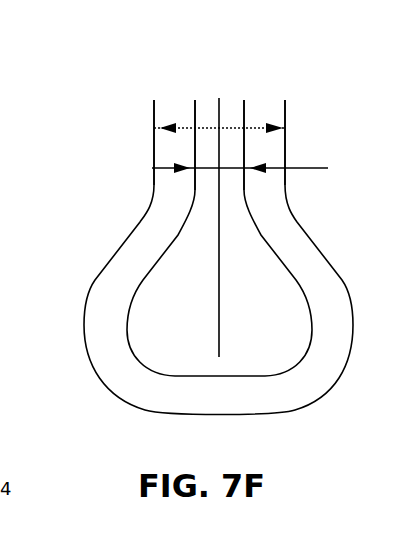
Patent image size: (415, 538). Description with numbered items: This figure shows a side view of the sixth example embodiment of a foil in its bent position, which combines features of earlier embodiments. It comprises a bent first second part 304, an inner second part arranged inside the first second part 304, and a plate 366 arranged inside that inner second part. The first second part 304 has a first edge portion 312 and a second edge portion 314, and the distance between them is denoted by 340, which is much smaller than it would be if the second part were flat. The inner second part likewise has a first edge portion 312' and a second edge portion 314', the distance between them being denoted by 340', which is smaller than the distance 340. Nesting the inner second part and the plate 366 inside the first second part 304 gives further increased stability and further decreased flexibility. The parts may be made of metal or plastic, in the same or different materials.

The first second part 304 is at (142, 220).
The first edge portion 312 is at (123, 124).
The first edge portion 312' is at (157, 114).
The plate 366 is at (219, 98).
The second edge portion 314' is at (283, 115).
The second edge portion 314 is at (317, 125).
The distance between first and second edge portions 340 is at (255, 138).
The distance between first and second edge portions 340' is at (261, 192).